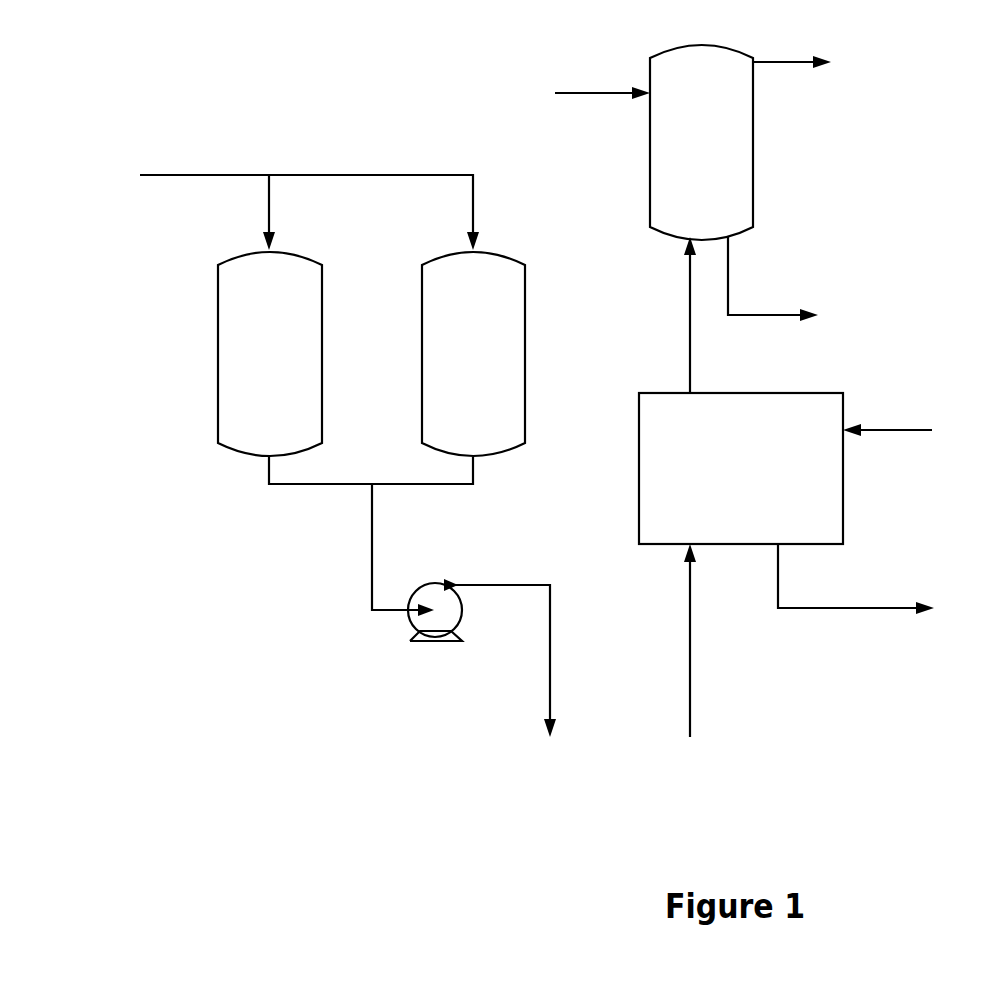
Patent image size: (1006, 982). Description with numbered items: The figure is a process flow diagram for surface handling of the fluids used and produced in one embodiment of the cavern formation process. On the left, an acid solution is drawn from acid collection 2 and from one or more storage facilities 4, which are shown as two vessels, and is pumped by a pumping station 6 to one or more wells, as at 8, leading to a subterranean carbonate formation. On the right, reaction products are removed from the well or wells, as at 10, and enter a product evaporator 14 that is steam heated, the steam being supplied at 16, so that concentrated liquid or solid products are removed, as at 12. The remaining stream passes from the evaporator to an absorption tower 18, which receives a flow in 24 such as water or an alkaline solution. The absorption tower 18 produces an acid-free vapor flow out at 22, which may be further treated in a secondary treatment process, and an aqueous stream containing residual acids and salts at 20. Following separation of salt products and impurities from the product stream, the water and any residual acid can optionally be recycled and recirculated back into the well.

The acid collection 2 is at (292, 204).
The storage facilities 4 is at (371, 368).
The pumping station 6 is at (417, 583).
The well 8 is at (502, 682).
The reaction products removed from the well 10 is at (690, 665).
The concentrated liquid or solid products 12 is at (876, 585).
The product evaporator 14 is at (741, 468).
The steam heating 16 is at (910, 430).
The absorption tower 18 is at (701, 219).
The aqueous stream containing residual acids and salts 20 is at (792, 285).
The acid-free vapor flow out 22 is at (810, 62).
The flow in 24 is at (580, 93).